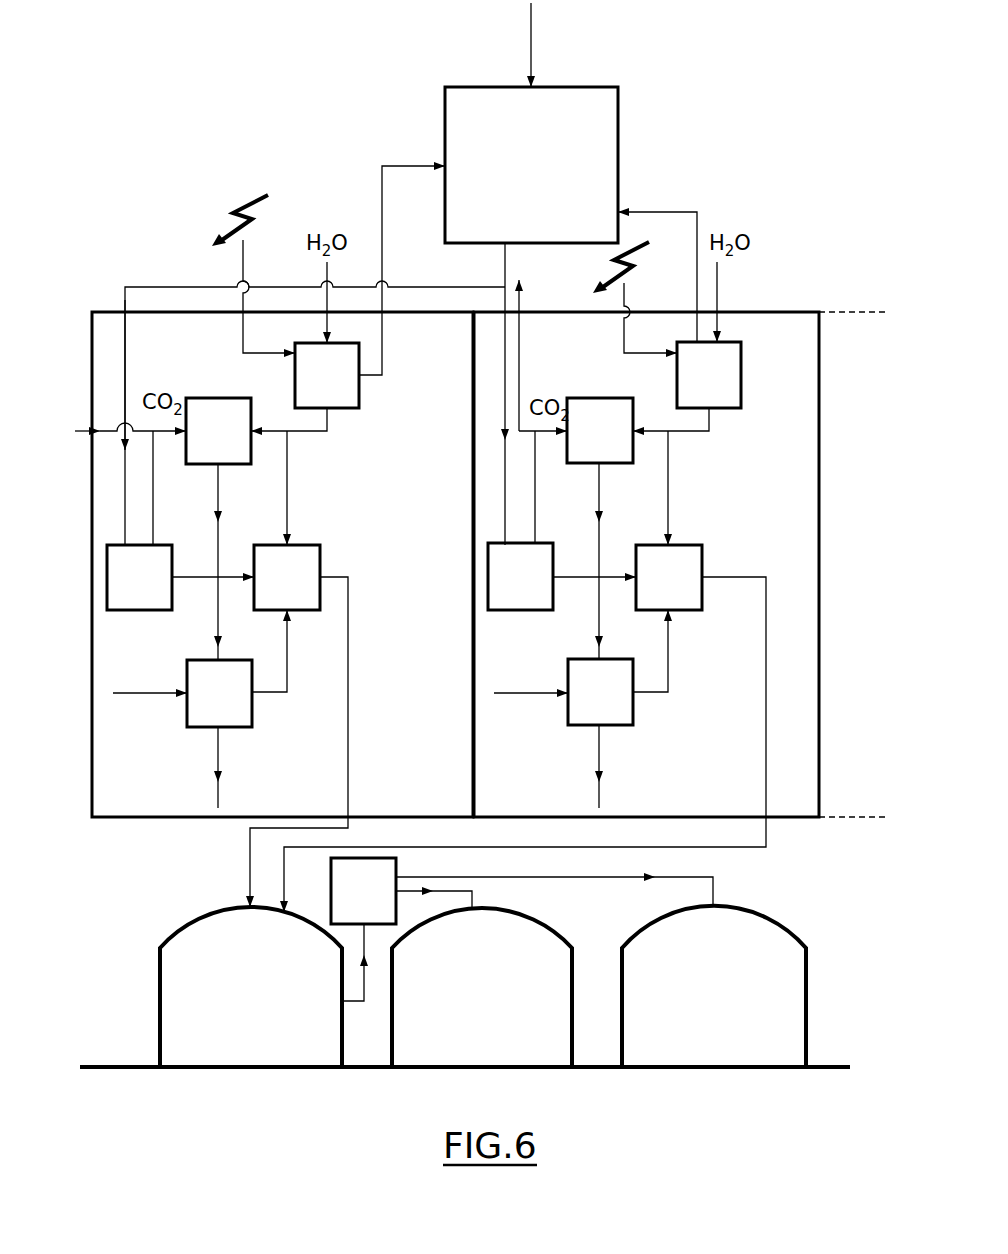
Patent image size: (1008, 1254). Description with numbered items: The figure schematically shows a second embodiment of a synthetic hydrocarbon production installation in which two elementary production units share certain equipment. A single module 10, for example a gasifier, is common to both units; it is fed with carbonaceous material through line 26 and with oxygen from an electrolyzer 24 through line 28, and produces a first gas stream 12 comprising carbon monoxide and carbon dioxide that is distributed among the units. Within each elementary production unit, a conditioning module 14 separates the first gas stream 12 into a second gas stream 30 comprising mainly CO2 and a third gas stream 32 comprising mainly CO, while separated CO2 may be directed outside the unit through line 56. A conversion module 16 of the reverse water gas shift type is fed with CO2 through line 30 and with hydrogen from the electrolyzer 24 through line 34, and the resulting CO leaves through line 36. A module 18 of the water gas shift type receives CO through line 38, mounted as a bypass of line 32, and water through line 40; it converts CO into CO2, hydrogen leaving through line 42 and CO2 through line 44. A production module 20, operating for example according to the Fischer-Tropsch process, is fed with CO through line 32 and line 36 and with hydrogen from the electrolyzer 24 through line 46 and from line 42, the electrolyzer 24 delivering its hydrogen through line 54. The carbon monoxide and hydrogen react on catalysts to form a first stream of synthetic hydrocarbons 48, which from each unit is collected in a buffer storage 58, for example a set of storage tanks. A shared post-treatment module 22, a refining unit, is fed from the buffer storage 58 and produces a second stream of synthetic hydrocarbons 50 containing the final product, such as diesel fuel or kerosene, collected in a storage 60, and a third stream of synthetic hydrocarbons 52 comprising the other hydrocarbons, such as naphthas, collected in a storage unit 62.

The module for producing a first gas stream 10 is at (521, 175).
The first gas stream 12 is at (505, 262).
The conditioning module 14 is at (129, 591).
The conversion module for converting carbon dioxide into carbon monoxide 16 is at (208, 445).
The module for converting carbon monoxide into carbon dioxide 18 is at (209, 707).
The module for producing a first stream of synthetic hydrocarbons 20 is at (277, 591).
The post-treatment module 22 is at (353, 905).
The electrolyzer 24 is at (317, 390).
The line 26 is at (531, 52).
The line 28 is at (382, 360).
The second gas stream 30 is at (153, 520).
The third gas stream 32 is at (207, 580).
The line 34 is at (293, 429).
The line 36 is at (220, 557).
The line 38 is at (218, 612).
The line 40 is at (142, 693).
The line 42 is at (288, 686).
The line 44 is at (218, 747).
The line 46 is at (287, 518).
The first stream of synthetic hydrocarbons 48 is at (348, 668).
The second stream of synthetic hydrocarbons 50 is at (461, 892).
The third stream of synthetic hydrocarbons 52 is at (558, 878).
The line 54 is at (310, 433).
The line 56 is at (108, 424).
The buffer storage 58 is at (160, 1027).
The storage 60 is at (392, 1010).
The storage unit 62 is at (622, 1000).